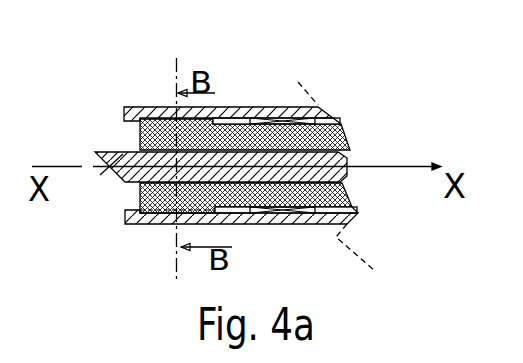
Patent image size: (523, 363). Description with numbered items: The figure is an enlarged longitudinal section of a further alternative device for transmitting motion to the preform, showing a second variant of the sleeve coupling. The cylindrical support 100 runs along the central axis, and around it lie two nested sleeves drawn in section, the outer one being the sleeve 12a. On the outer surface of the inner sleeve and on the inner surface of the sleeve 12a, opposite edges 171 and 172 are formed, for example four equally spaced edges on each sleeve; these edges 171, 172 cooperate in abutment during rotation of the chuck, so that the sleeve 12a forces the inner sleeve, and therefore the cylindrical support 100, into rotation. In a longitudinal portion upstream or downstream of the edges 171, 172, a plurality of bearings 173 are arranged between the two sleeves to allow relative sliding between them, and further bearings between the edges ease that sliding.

The cylindrical support 100 is at (107, 169).
The sleeve 12a is at (232, 116).
The bearings 173 is at (287, 124).
The edge 171 is at (213, 211).
The edge 172 is at (139, 126).